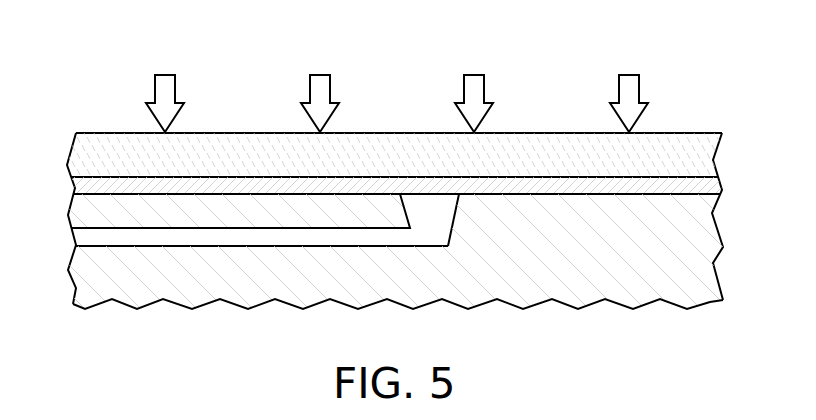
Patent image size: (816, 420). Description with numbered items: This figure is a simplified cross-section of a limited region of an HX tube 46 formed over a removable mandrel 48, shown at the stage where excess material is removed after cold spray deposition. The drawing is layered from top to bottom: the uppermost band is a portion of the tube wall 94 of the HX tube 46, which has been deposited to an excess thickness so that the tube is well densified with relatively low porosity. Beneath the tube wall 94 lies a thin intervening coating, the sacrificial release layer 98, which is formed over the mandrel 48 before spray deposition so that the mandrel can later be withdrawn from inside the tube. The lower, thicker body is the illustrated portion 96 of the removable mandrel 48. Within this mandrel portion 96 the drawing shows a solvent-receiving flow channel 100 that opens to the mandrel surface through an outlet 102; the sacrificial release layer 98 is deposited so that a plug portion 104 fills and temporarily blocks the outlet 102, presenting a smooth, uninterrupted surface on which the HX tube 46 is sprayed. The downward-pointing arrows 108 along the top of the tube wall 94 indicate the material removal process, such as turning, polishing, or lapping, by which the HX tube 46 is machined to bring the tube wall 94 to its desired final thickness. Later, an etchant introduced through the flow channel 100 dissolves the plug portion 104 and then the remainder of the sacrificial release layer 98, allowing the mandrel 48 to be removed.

The HX tube 46 is at (371, 170).
The removable mandrel 48 is at (392, 350).
The tube wall 94 is at (675, 167).
The illustrated portion of removable mandrel 96 is at (679, 245).
The sacrificial release layer 98 is at (395, 142).
The solvent-receiving flow channels 100 is at (281, 247).
The outlets 102 is at (445, 237).
The plug portions 104 is at (453, 207).
The arrows 108 is at (175, 85).